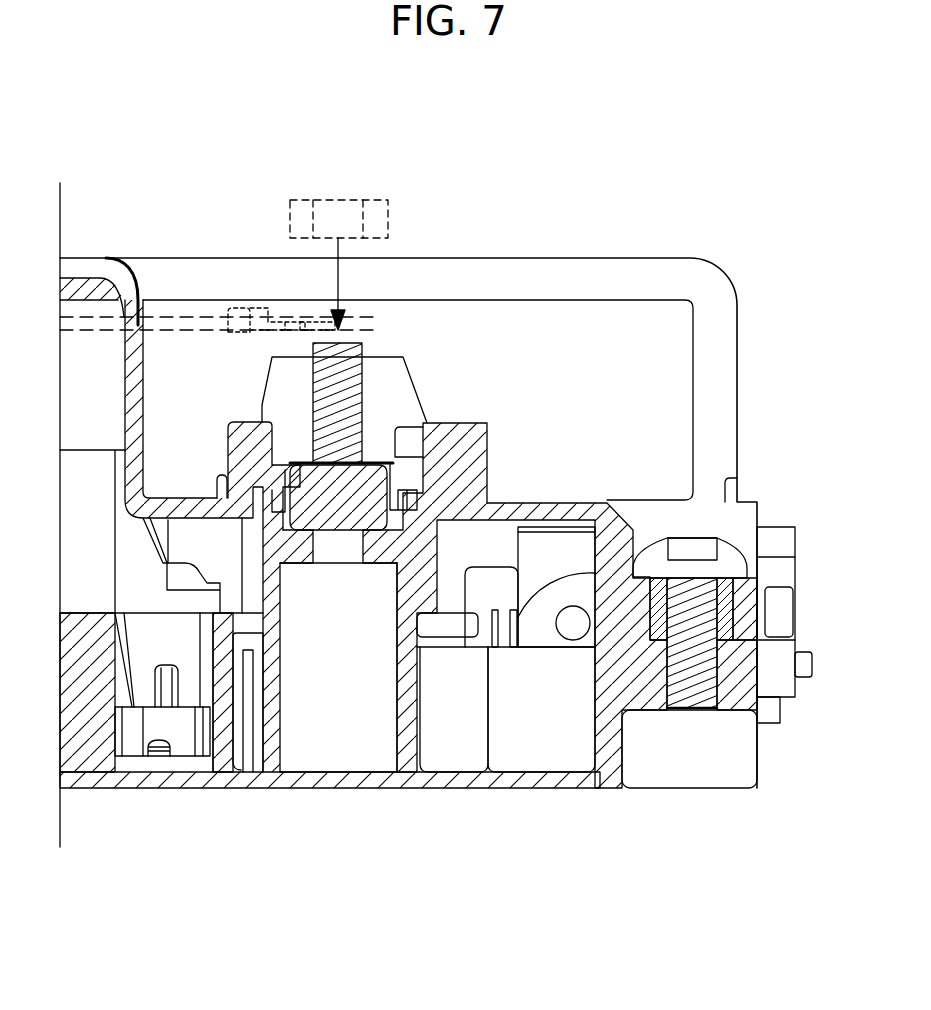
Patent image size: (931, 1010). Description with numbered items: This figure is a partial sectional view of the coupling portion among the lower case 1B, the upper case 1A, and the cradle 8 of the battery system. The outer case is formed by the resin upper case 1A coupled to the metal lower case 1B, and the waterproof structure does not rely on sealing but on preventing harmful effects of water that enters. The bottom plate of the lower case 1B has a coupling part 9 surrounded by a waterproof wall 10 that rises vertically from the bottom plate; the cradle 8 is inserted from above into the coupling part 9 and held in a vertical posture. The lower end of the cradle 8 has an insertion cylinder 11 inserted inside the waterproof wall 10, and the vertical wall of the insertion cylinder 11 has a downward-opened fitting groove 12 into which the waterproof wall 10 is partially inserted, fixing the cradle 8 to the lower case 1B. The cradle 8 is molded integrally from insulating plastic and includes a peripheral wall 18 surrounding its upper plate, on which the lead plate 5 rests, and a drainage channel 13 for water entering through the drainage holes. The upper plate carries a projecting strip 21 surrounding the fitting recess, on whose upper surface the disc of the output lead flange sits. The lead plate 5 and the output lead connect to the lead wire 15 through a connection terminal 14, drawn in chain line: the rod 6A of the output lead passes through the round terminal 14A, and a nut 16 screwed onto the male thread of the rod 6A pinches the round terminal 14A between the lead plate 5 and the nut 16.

The upper case 1A is at (542, 503).
The lower case 1B is at (538, 785).
The lead plate 5 is at (397, 492).
The rod 6A is at (360, 378).
The cradle 8 is at (306, 682).
The coupling part 9 is at (301, 768).
The waterproof wall 10 is at (182, 707).
The insertion cylinder 11 is at (272, 658).
The fitting groove 12 is at (222, 668).
The drainage channel 13 is at (378, 764).
The connection terminal 14 is at (279, 292).
The round terminal 14A is at (330, 327).
The lead wire 15 is at (175, 317).
The nut 16 is at (330, 200).
The peripheral wall 18 is at (223, 477).
The projecting strip 21 is at (288, 473).